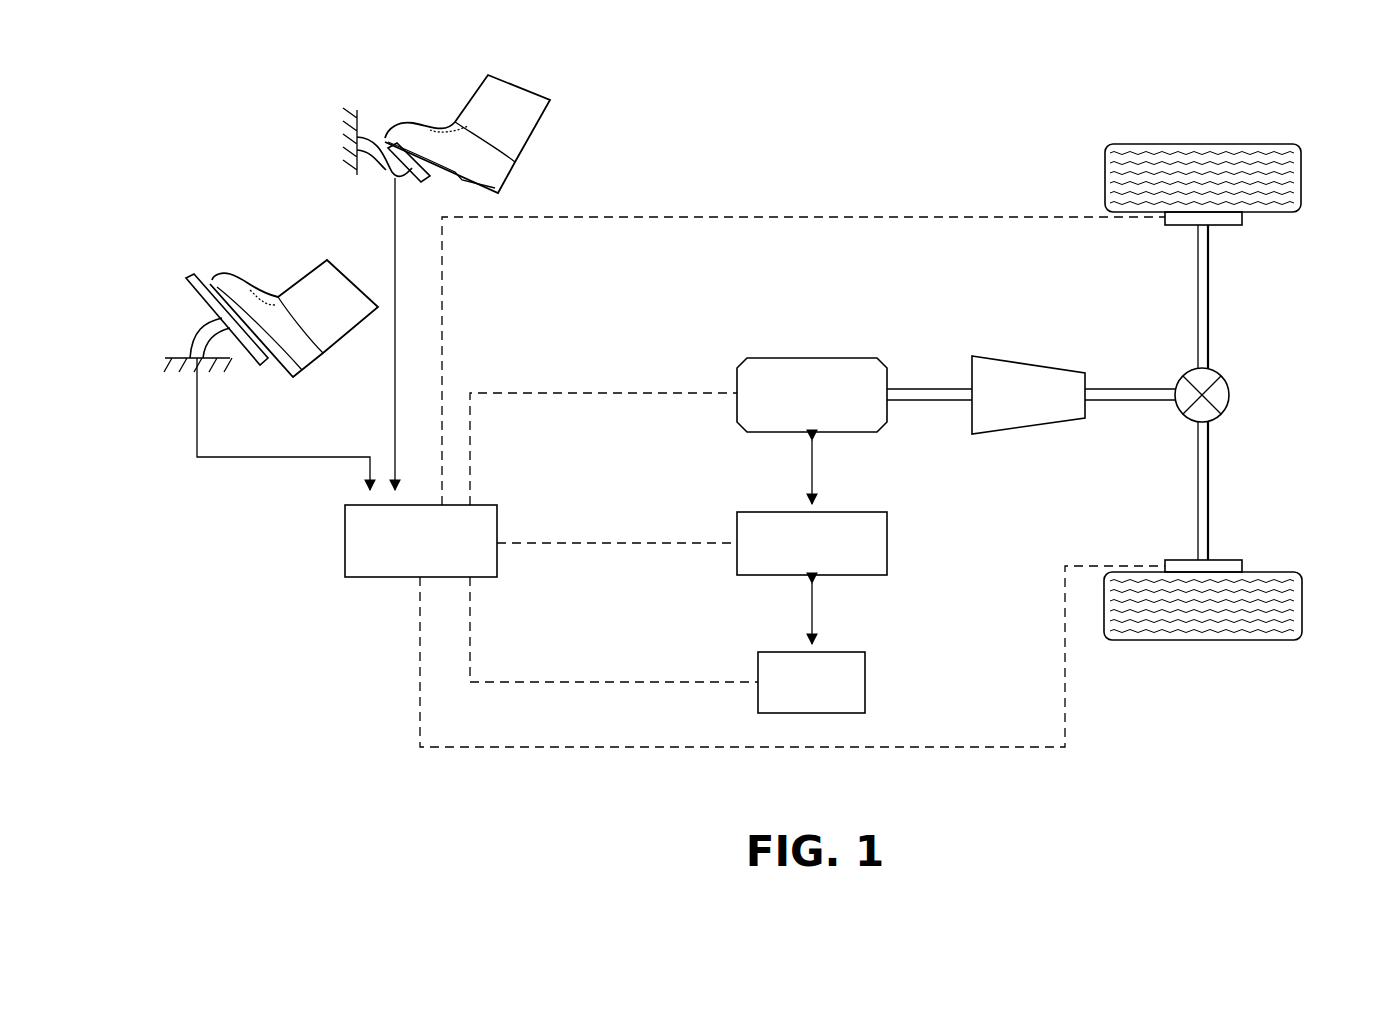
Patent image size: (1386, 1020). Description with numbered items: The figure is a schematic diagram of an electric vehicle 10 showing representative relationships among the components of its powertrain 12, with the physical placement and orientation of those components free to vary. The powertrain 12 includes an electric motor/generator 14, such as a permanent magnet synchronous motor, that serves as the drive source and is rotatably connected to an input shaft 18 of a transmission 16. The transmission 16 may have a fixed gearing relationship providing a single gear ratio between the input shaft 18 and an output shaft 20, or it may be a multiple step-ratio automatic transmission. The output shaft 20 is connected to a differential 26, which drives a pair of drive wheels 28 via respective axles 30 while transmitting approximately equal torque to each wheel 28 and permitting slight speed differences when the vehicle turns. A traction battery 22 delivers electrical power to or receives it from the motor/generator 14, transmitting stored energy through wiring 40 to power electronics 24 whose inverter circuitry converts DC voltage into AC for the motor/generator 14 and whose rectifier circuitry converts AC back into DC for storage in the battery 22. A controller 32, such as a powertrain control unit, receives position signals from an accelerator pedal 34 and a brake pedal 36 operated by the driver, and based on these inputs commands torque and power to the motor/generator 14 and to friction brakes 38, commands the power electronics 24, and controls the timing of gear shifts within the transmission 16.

The electric vehicle 10 is at (996, 52).
The powertrain 12 is at (860, 275).
The electric motor/generator 14 is at (737, 380).
The transmission 16 is at (1028, 360).
The input shaft 18 is at (937, 388).
The output shaft 20 is at (1122, 387).
The traction battery 22 is at (758, 668).
The power electronics 24 is at (737, 528).
The differential 26 is at (1230, 395).
The drive wheels 28 is at (1205, 144).
The axles 30 is at (1210, 293).
The controller 32 is at (345, 541).
The accelerator pedal 34 is at (250, 246).
The brake pedal 36 is at (430, 80).
The friction brakes 38 is at (1243, 218).
The wiring 40 is at (815, 625).